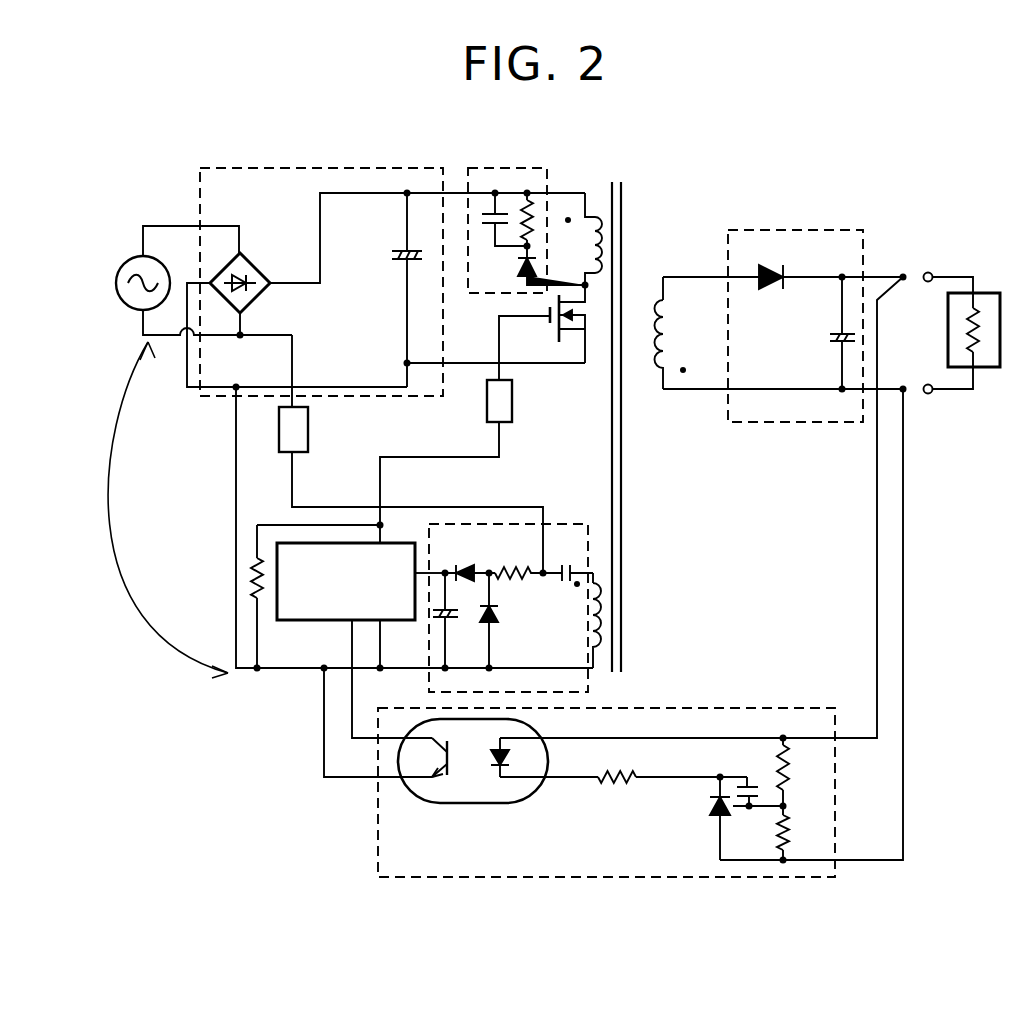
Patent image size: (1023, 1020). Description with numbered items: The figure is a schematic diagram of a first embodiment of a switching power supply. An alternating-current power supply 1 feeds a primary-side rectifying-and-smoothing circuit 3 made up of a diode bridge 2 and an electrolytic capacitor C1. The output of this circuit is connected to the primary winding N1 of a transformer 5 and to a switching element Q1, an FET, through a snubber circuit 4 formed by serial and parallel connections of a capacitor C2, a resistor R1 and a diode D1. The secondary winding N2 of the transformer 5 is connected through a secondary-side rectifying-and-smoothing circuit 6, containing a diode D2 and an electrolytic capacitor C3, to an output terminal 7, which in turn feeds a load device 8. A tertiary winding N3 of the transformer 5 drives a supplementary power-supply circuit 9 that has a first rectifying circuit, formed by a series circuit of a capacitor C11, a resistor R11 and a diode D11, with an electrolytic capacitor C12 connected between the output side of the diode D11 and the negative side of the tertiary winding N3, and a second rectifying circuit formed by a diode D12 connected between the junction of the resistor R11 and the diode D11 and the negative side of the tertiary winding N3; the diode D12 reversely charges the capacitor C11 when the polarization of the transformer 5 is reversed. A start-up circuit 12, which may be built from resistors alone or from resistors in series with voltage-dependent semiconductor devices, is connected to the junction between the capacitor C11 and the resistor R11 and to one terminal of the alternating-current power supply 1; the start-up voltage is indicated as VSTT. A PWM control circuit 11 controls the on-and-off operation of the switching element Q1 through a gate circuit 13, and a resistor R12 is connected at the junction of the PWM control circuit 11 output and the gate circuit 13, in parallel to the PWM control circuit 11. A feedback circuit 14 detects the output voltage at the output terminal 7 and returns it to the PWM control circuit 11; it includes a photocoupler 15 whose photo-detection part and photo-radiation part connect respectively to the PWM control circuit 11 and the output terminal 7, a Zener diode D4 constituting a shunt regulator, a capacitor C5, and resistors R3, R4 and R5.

The alternating-current power supply 1 is at (125, 266).
The diode bridge 2 is at (250, 266).
The primary-side rectifying-and-smoothing circuit 3 is at (340, 168).
The snubber circuit 4 is at (503, 168).
The transformer 5 is at (621, 182).
The secondary-side rectifying-and-smoothing circuit 6 is at (815, 230).
The output terminal 7 is at (924, 283).
The load device 8 is at (985, 293).
The supplementary power-supply circuit 9 is at (588, 682).
The PWM control circuit 11 is at (300, 622).
The start-up circuit 12 is at (308, 432).
The gate circuit 13 is at (514, 405).
The feedback circuit 14 is at (378, 835).
The photocoupler 15 is at (470, 803).
The electrolytic capacitor C1 is at (388, 290).
The capacitor C2 is at (483, 220).
The resistor R1 is at (538, 220).
The diode D1 is at (531, 265).
The primary winding N1 is at (603, 210).
The switching element Q1 is at (542, 332).
The secondary winding N2 is at (668, 276).
The diode D2 is at (770, 295).
The electrolytic capacitor C3 is at (821, 333).
The diode D11 is at (469, 557).
The resistor R11 is at (516, 556).
The capacitor C11 is at (568, 557).
The diode D12 is at (513, 622).
The electrolytic capacitor C12 is at (440, 622).
The tertiary winding N3 is at (604, 590).
The resistor R12 is at (252, 585).
The resistor R5 is at (616, 792).
The capacitor C5 is at (765, 786).
The Zener diode D4 is at (701, 818).
The resistor R3 is at (800, 772).
The resistor R4 is at (800, 835).
The start-up voltage VSTT is at (168, 510).